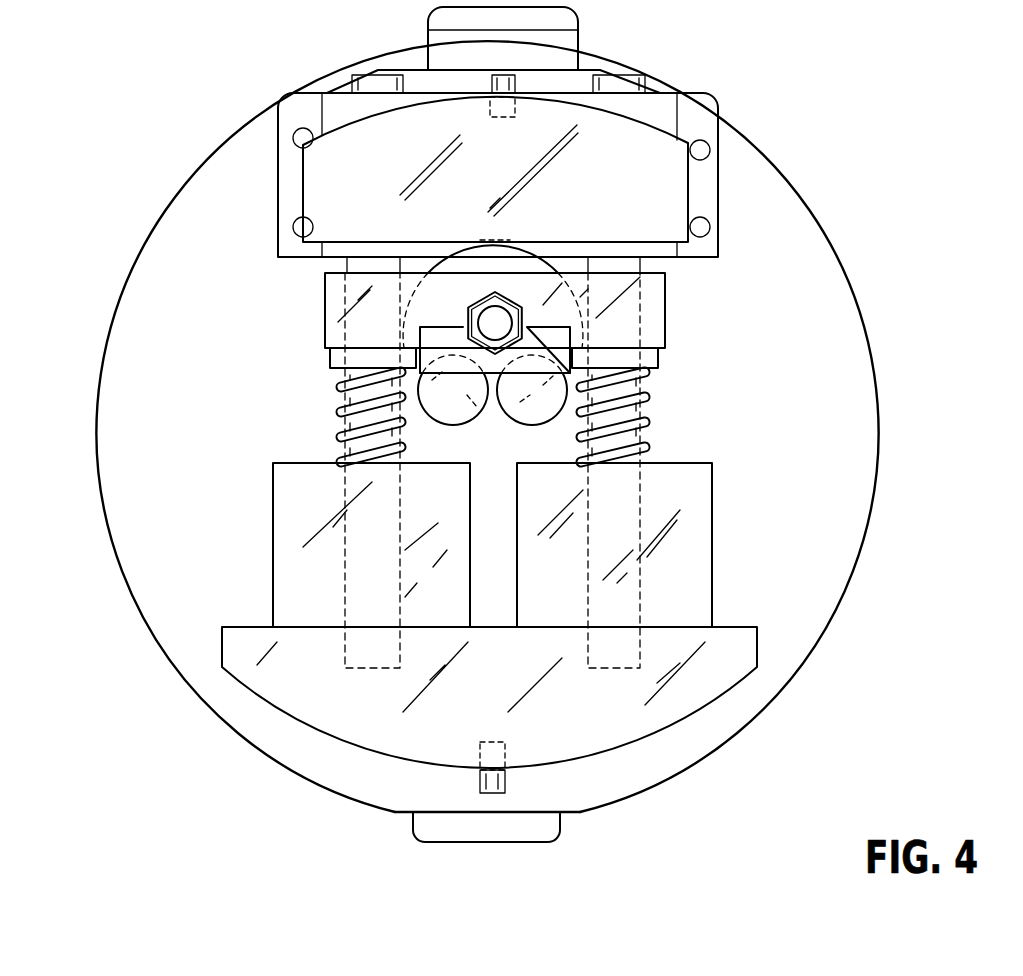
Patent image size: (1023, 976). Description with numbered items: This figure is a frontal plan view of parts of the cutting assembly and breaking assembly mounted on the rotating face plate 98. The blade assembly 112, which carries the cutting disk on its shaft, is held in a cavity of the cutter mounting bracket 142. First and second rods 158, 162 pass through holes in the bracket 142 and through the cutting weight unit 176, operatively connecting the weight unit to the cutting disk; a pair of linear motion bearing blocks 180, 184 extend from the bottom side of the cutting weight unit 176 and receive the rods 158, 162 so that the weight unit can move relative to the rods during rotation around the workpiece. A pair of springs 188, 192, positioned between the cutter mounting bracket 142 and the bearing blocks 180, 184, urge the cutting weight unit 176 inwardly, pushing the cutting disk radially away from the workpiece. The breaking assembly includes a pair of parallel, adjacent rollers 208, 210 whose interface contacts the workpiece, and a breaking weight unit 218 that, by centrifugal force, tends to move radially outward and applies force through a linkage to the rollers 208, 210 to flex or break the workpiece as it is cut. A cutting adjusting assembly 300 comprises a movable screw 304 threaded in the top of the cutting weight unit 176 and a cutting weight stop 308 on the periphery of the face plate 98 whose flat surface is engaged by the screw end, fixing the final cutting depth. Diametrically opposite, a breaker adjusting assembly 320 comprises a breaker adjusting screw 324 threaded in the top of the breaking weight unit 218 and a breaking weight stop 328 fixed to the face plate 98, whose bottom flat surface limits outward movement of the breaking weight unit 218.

The face plate 98 is at (845, 575).
The blade assembly 112 is at (466, 323).
The cutter mounting bracket 142 is at (665, 313).
The first rod 158 is at (340, 393).
The second rod 162 is at (640, 384).
The cutting weight unit 176 is at (692, 703).
The linear motion bearing block 180 is at (283, 593).
The linear motion bearing block 184 is at (700, 520).
The spring 188 is at (340, 410).
The spring 192 is at (645, 412).
The roller 208 is at (441, 423).
The roller 210 is at (527, 420).
The breaking weight unit 218 is at (677, 192).
The cutting adjusting assembly 300 is at (405, 828).
The cutter adjusting member 304 is at (508, 780).
The cutting weight stop 308 is at (560, 830).
The breaker adjusting assembly 320 is at (598, 52).
The breaker adjusting member 324 is at (490, 92).
The breaking weight stop 328 is at (440, 43).